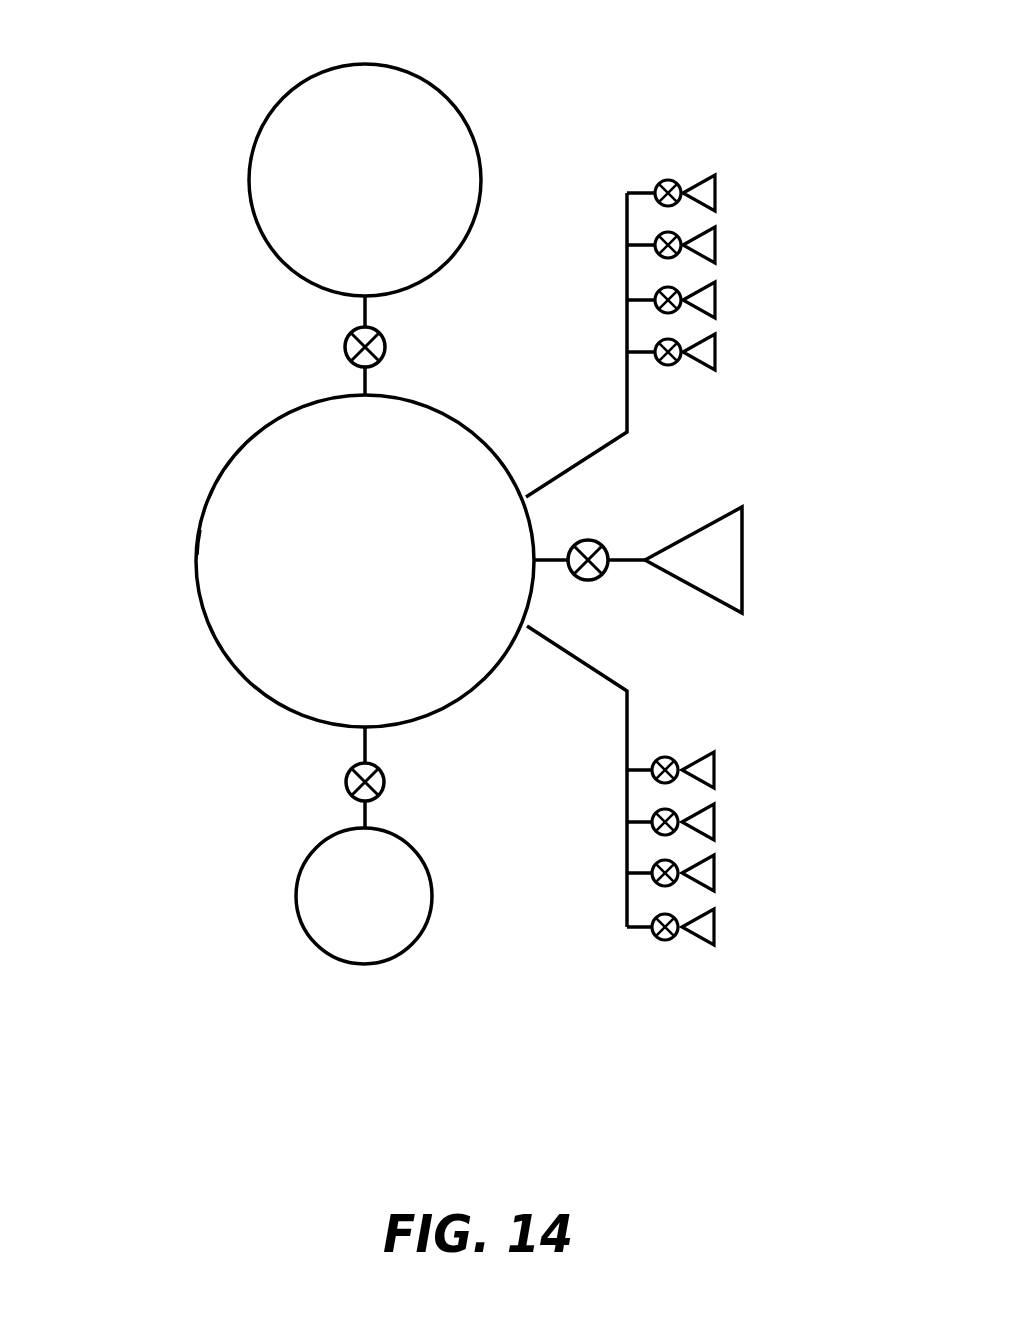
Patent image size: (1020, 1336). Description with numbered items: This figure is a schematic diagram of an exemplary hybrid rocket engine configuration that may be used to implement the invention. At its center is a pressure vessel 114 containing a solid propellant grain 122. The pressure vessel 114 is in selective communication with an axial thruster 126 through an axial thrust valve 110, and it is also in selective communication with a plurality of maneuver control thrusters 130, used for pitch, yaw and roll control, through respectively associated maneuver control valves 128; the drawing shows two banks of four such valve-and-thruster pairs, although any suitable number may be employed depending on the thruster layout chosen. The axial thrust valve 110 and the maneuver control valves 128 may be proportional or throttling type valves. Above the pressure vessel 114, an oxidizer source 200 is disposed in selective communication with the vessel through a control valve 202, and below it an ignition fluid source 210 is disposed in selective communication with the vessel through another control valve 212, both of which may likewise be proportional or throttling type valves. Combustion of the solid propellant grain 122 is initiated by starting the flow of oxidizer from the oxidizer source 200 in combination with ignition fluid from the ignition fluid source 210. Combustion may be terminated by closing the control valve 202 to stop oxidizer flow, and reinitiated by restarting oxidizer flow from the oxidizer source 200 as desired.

The axial thrust valve 110 is at (598, 544).
The pressure vessel 114 is at (196, 588).
The solid propellant grain 122 is at (400, 574).
The axial thruster 126 is at (742, 550).
The maneuver control valves 128 is at (669, 181).
The maneuver control thrusters 130 is at (715, 193).
The oxidizer source 200 is at (450, 97).
The control valve 202 is at (345, 347).
The ignition fluid source 210 is at (296, 905).
The control valve 212 is at (346, 776).